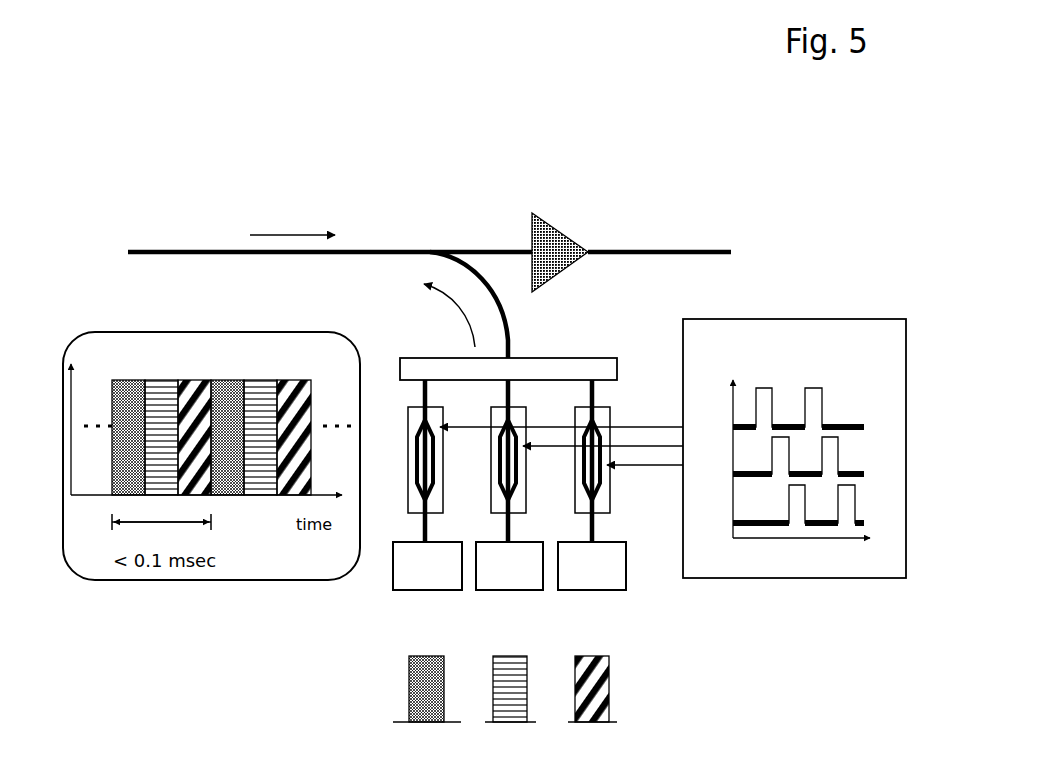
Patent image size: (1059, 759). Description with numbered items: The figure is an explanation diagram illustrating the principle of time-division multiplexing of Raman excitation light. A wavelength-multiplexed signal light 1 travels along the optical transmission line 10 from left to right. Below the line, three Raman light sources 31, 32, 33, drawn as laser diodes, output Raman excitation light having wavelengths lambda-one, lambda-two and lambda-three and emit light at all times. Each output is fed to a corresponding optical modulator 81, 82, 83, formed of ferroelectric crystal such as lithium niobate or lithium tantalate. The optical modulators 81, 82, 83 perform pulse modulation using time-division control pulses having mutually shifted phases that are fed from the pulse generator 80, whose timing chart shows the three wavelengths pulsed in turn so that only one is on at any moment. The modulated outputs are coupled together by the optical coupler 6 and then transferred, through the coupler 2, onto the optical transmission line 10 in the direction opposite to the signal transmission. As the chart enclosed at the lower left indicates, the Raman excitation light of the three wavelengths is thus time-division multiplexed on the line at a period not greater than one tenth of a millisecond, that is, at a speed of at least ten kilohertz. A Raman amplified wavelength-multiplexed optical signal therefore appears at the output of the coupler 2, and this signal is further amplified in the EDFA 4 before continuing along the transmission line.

The wavelength-multiplexed signal light 1 is at (277, 216).
The coupler 2 is at (344, 305).
The EDFA 4 is at (560, 241).
The optical coupler 6 is at (508, 352).
The optical transmission line 10 is at (659, 230).
The pulse generator 80 is at (794, 432).
The optical modulator 81 is at (532, 461).
The optical modulator 82 is at (570, 461).
The optical modulator 83 is at (609, 461).
The Raman light source 31 is at (415, 632).
The Raman light source 32 is at (500, 632).
The Raman light source 33 is at (589, 632).